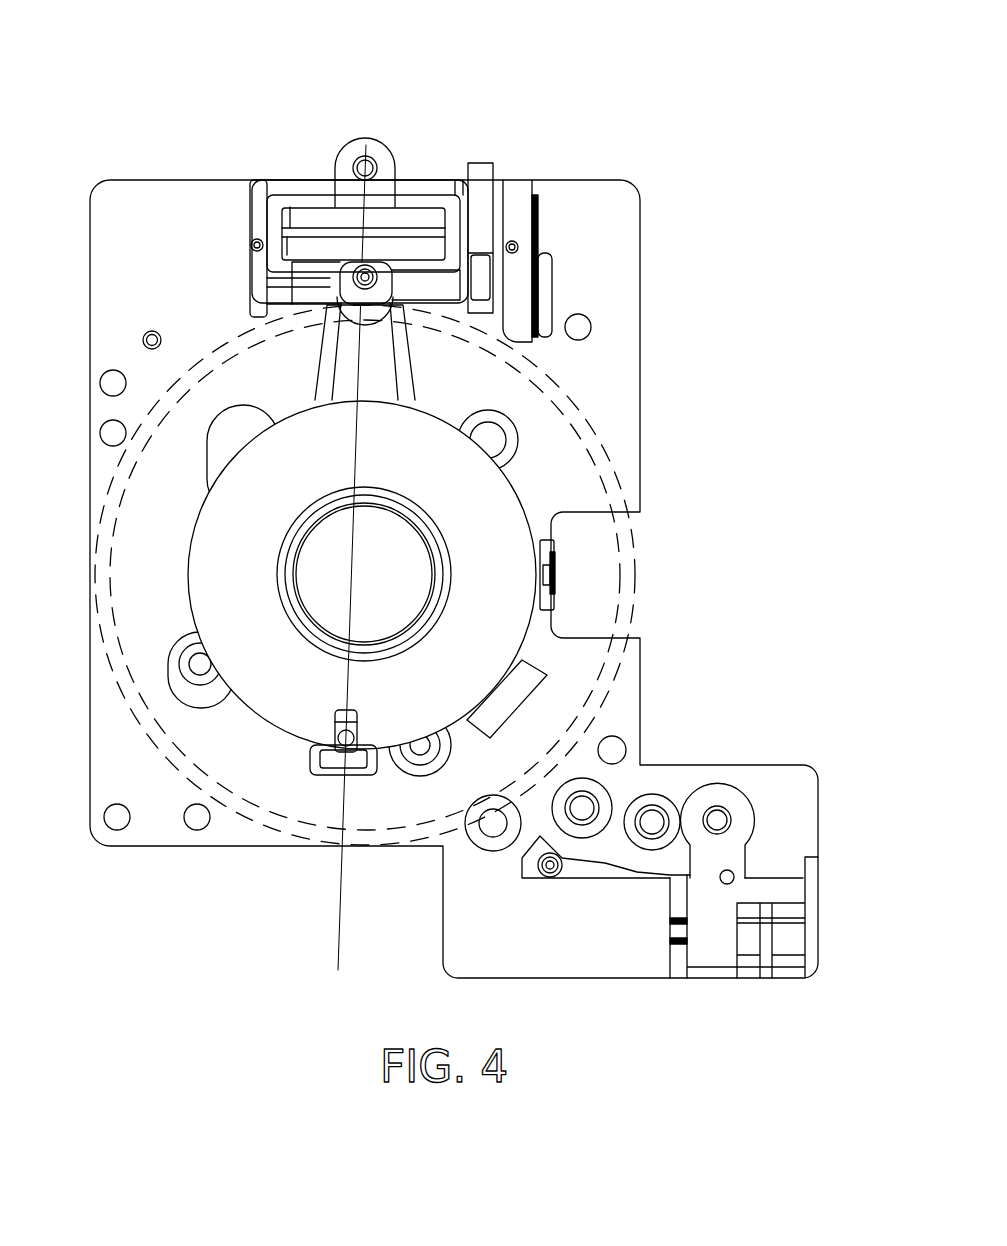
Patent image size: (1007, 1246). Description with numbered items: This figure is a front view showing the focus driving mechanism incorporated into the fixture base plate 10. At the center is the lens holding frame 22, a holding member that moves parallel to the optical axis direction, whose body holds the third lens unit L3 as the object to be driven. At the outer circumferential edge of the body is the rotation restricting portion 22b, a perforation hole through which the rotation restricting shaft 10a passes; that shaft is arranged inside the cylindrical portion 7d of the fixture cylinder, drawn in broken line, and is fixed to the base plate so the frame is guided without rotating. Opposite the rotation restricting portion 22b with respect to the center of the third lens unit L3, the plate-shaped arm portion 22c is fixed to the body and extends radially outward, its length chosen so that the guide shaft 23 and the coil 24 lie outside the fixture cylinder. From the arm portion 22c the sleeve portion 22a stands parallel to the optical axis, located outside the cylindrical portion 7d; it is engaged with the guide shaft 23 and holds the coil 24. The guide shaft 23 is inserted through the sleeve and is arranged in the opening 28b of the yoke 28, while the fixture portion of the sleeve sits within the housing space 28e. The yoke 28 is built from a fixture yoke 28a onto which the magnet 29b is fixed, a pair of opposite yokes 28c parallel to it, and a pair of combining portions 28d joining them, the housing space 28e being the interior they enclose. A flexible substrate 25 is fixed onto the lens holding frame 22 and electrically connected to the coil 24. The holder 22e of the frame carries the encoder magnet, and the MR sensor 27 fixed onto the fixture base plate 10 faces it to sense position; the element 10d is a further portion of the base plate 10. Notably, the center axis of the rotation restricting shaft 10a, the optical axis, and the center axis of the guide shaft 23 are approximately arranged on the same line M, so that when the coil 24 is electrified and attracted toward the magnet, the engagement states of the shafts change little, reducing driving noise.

The fixture base plate 10 is at (638, 698).
The rotation restricting shaft 10a is at (353, 753).
The mounting portion of base plate 10d is at (518, 200).
The cylindrical portion 7d is at (638, 557).
The lens holding frame 22 is at (473, 627).
The sleeve portion 22a is at (247, 300).
The rotation restricting portion 22b is at (347, 747).
The arm portion 22c is at (368, 352).
The holder 22e is at (385, 283).
The guide shaft 23 is at (372, 263).
The coil 24 is at (482, 235).
The flexible substrate 25 is at (352, 255).
The MR sensor 27 is at (538, 217).
The yoke 28 is at (365, 138).
The fixture yoke 28a is at (303, 207).
The opening 28b is at (455, 290).
The opposite yokes 28c is at (297, 287).
The combining portions 28d is at (310, 278).
The housing space 28e is at (290, 233).
The magnet 29b is at (422, 218).
The third lens unit L3 is at (388, 538).
The line M is at (347, 579).